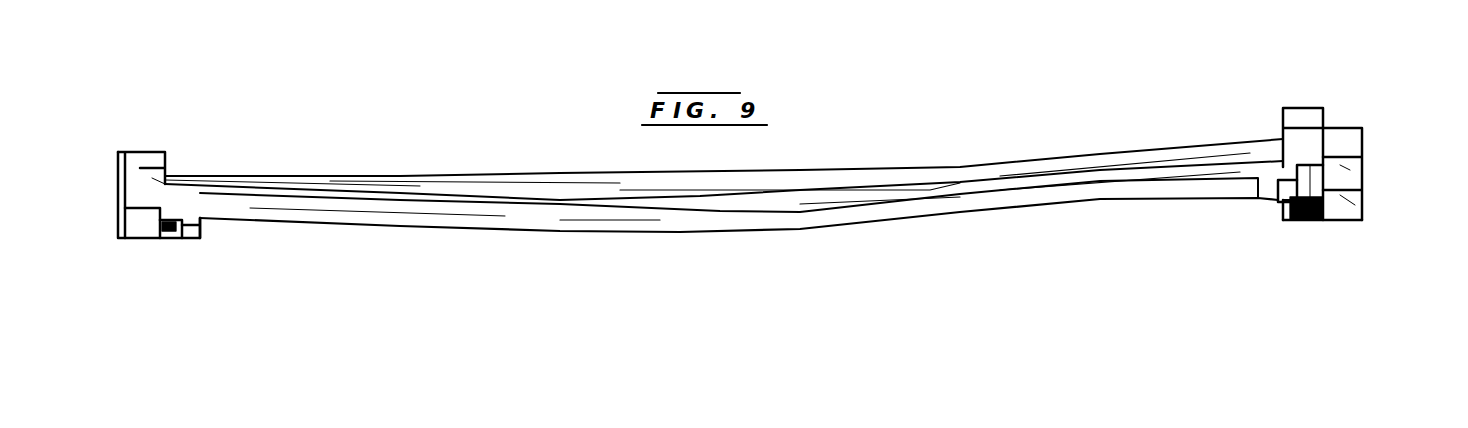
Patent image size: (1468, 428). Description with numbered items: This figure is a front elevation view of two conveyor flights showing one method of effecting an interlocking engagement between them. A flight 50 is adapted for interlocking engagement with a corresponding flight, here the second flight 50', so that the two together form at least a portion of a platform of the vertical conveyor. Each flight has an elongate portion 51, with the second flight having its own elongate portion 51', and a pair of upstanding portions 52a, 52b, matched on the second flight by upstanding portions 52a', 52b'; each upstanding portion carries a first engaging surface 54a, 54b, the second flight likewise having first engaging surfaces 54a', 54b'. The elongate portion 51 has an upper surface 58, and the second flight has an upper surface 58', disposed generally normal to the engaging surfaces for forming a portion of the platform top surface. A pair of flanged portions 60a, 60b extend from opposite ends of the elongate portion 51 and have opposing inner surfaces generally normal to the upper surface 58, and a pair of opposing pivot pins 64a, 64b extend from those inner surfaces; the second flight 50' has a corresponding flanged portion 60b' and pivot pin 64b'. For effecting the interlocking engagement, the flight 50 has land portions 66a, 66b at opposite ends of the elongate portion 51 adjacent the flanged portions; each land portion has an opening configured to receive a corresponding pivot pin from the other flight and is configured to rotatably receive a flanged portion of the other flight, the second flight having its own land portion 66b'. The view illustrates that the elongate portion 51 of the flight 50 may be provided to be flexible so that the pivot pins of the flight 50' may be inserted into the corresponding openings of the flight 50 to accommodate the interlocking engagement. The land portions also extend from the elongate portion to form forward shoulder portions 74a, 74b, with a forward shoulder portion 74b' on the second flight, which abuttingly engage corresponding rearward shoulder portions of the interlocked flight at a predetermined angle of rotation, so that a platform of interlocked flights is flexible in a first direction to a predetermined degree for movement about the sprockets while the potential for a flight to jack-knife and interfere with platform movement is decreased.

The flight 50 is at (1325, 121).
The interlocked flight 50' is at (1406, 146).
The elongate portion 51 is at (739, 221).
The elongate portion 51' is at (724, 160).
The upstanding portion 52a is at (173, 180).
The upstanding portion 52a' is at (157, 166).
The upstanding portion 52b is at (1267, 135).
The upstanding portion 52b' is at (1379, 141).
The first engaging surface 54a is at (200, 166).
The first engaging surface 54a' is at (96, 185).
The first engaging surface 54b is at (1252, 131).
The first engaging surface 54b' is at (1393, 156).
The upper surface 58 is at (314, 158).
The upper surface 58' is at (401, 165).
The flanged portion 60a is at (142, 242).
The flanged portion 60b is at (1372, 227).
The flanged portion 60b' is at (1392, 215).
The pivot pin 64a is at (172, 242).
The pivot pin 64b is at (1263, 219).
The pivot pin 64b' is at (1355, 230).
The land portion 66a is at (187, 242).
The land portion 66b is at (1255, 224).
The land portion 66b' is at (1328, 262).
The forward shoulder portion 74a is at (200, 238).
The forward shoulder portion 74b is at (1237, 200).
The forward shoulder portion 74b' is at (1251, 251).